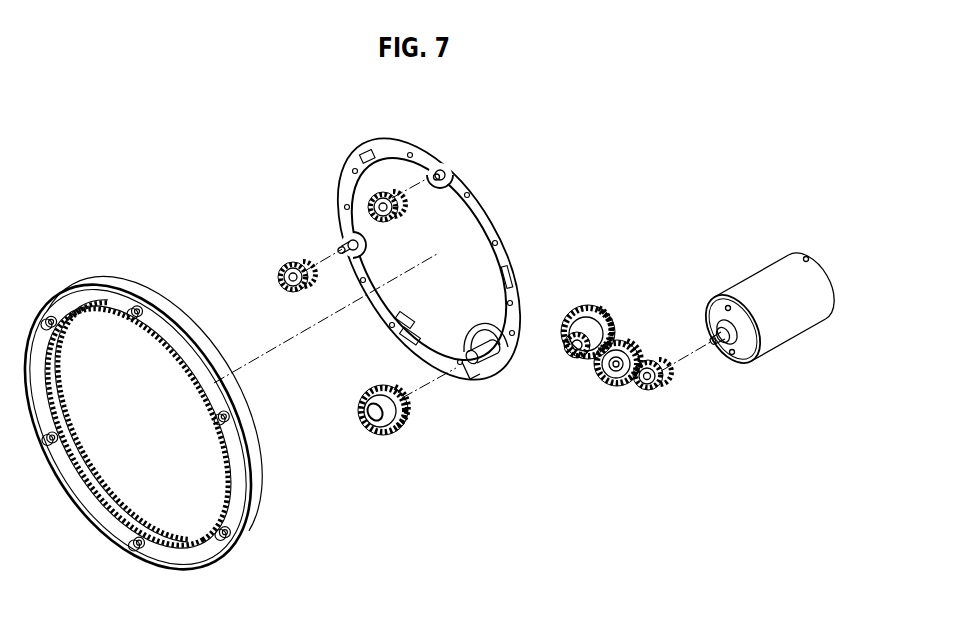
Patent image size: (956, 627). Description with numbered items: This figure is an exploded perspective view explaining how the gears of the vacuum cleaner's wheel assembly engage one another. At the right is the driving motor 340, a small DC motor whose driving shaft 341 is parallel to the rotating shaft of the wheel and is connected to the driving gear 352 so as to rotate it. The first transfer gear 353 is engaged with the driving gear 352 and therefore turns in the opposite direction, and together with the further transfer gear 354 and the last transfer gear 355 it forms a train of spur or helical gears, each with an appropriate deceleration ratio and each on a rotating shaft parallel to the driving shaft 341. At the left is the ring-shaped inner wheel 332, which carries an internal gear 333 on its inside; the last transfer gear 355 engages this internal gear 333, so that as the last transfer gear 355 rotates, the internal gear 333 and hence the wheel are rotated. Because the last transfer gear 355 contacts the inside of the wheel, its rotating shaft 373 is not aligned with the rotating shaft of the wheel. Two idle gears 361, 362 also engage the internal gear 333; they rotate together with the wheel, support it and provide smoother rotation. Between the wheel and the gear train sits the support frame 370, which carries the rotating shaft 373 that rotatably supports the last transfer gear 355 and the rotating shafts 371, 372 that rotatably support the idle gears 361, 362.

The inner wheel 332 is at (72, 302).
The internal gear 333 is at (60, 399).
The driving motor 340 is at (780, 334).
The driving shaft 341 is at (718, 349).
The driving gear 352 is at (657, 389).
The first transfer gear 353 is at (622, 338).
The transfer gear 354 is at (583, 304).
The last transfer gear 355 is at (410, 421).
The idle gear 361 is at (286, 265).
The idle gear 362 is at (381, 193).
The support frame 370 is at (345, 185).
The rotating shaft 371 is at (344, 238).
The rotating shaft 372 is at (431, 172).
The rotating shaft 373 is at (490, 356).